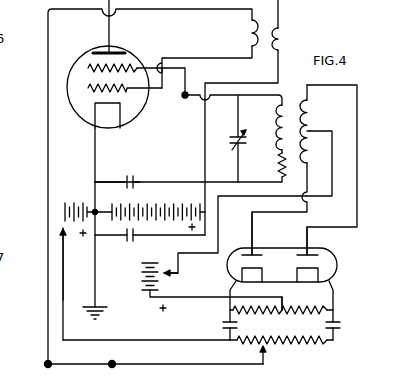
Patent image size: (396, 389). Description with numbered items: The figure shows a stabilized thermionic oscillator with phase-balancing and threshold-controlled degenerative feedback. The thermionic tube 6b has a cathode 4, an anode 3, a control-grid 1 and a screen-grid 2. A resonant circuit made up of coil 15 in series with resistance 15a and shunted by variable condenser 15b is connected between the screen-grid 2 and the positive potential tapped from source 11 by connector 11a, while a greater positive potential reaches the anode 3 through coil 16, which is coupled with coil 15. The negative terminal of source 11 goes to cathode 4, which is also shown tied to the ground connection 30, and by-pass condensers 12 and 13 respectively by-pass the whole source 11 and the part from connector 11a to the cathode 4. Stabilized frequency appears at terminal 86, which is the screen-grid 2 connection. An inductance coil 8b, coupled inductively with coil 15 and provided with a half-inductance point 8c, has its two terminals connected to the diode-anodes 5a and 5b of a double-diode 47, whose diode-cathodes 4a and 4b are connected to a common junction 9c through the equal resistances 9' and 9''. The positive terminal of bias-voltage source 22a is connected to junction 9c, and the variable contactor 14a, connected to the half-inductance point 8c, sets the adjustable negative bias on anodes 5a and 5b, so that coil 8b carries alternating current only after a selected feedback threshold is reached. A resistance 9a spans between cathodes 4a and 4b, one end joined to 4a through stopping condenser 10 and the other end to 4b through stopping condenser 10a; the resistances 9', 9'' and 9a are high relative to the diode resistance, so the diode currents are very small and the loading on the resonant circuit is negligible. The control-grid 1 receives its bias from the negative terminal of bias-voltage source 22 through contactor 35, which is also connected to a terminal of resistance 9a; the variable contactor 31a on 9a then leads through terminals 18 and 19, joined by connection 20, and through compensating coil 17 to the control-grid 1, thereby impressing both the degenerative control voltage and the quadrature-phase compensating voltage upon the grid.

The control-grid 1 is at (150, 92).
The screen-grid 2 is at (138, 64).
The anode 3 is at (128, 50).
The cathode 4 is at (124, 116).
The diode-cathode 4a is at (240, 276).
The diode-cathode 4b is at (322, 276).
The diode-anode 5a is at (254, 246).
The diode-anode 5b is at (312, 248).
The thermionic tube 6b is at (91, 57).
The inductance coil 8b is at (309, 103).
The half-inductance point 8c is at (312, 130).
The resistance 9' is at (257, 319).
The resistance 9'' is at (304, 319).
The resistance 9a is at (312, 345).
The common junction 9c is at (288, 304).
The stopping condenser 10 is at (222, 325).
The stopping condenser 10a is at (338, 330).
The source 11 is at (158, 205).
The connector 11a is at (162, 196).
The by-pass condenser 12 is at (129, 244).
The by-pass condenser 13 is at (133, 180).
The variable contactor 14a is at (176, 272).
The coil 15 is at (273, 112).
The resistance 15a is at (278, 168).
The variable condenser 15b is at (236, 136).
The coil 16 is at (283, 28).
The compensating coil 17 is at (247, 34).
The terminal 18 is at (118, 364).
The terminal 19 is at (44, 365).
The connection 20 is at (92, 362).
The bias-voltage source 22 is at (75, 196).
The bias-voltage source 22a is at (143, 284).
The ground connection 30 is at (107, 308).
The variable contactor 31a is at (232, 362).
The contactor 35 is at (64, 238).
The double-diode 47 is at (340, 256).
The terminal 86 is at (185, 99).